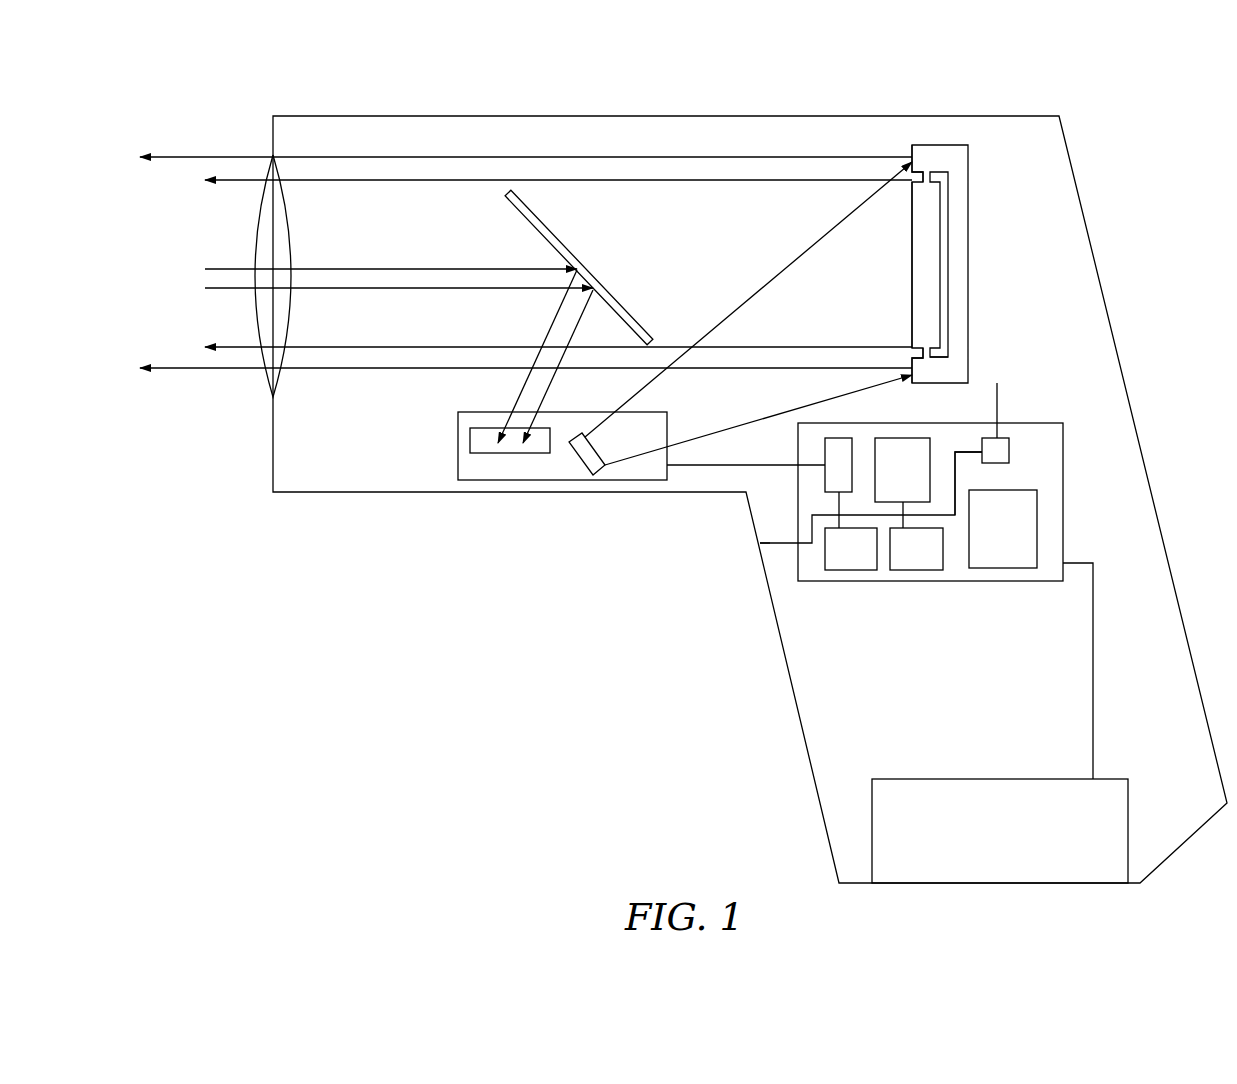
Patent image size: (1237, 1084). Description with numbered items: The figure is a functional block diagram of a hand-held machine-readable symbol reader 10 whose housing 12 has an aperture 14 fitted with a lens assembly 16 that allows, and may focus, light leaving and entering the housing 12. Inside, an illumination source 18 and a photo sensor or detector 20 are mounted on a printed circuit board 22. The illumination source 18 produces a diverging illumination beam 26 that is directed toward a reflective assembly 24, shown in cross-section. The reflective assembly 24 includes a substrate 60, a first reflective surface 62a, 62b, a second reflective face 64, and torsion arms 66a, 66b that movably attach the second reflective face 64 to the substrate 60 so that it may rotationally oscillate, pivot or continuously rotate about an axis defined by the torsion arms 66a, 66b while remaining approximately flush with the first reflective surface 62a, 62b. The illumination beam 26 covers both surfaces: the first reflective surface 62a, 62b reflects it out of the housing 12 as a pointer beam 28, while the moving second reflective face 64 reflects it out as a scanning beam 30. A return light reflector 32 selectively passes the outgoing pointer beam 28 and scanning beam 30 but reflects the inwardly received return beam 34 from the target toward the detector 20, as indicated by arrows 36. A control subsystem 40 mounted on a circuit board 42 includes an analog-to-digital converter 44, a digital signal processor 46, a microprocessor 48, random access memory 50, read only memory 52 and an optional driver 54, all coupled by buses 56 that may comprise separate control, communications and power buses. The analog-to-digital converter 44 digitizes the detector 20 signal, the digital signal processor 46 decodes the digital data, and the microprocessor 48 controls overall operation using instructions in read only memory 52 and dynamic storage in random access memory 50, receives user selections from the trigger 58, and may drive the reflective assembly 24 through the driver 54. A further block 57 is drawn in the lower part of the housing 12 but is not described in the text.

The machine-readable symbol reader 10 is at (445, 650).
The housing 12 is at (1065, 134).
The aperture 14 is at (232, 398).
The lens assembly 16 is at (273, 157).
The illumination source 18 is at (577, 462).
The detector 20 is at (485, 454).
The printed circuit board 22 is at (640, 481).
The reflective assembly 24 is at (990, 222).
The illumination beam 26 is at (843, 348).
The pointer beam 28 is at (743, 158).
The scanning beam 30 is at (798, 182).
The return light reflector 32 is at (568, 247).
The return beam of light 34 is at (423, 270).
The arrows 36 is at (573, 330).
The control subsystem 40 is at (1052, 370).
The circuit board 42 is at (1063, 436).
The analog-to-digital converter 44 is at (825, 478).
The digital signal processor 46 is at (900, 438).
The microprocessor 48 is at (1002, 568).
The random access memory 50 is at (915, 570).
The read only memory 52 is at (851, 570).
The driver 54 is at (1002, 438).
The buses 56 is at (970, 472).
The battery 57 is at (872, 833).
The trigger 58 is at (767, 593).
The substrate 60 is at (968, 311).
The first reflective surface 62a is at (913, 164).
The first reflective surface 62b is at (913, 362).
The second reflective face 64 is at (912, 265).
The torsion arm 66a is at (931, 172).
The torsion arm 66b is at (948, 358).